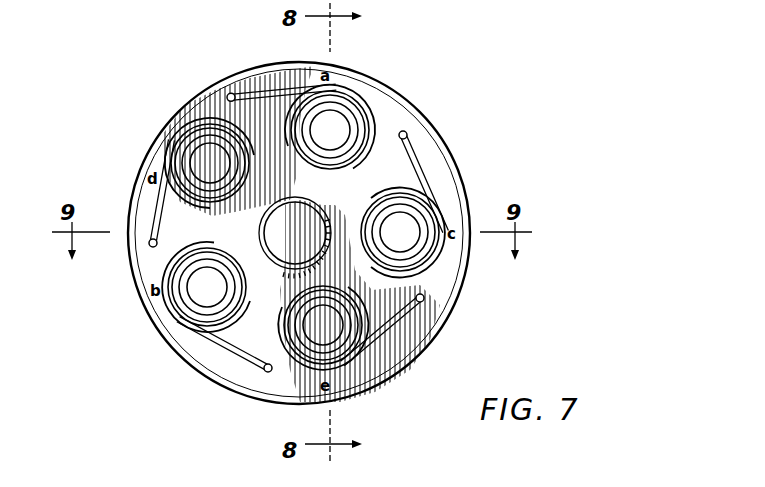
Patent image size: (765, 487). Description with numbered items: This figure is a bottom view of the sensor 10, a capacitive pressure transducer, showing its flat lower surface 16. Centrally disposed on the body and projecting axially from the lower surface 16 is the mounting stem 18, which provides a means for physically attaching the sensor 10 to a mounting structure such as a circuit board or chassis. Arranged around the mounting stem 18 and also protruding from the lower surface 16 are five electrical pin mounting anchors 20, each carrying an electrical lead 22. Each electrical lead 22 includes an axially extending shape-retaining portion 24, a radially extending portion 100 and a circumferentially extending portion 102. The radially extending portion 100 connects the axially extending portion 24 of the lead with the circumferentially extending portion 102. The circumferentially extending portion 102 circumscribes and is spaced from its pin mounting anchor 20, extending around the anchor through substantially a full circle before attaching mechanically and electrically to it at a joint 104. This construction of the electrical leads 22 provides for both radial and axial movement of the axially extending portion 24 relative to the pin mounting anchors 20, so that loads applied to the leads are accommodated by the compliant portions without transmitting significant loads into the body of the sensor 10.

The sensor 10 is at (135, 82).
The flat lower surface 16 is at (393, 96).
The mounting stem 18 is at (270, 230).
The electrical pin mounting anchor 20 is at (303, 227).
The electrical lead 22 is at (294, 229).
The axially extending shape-retaining portion 24 is at (229, 93).
The radially extending portion 100 is at (282, 90).
The circumferentially extending portion 102 is at (250, 165).
The joint 104 is at (303, 90).